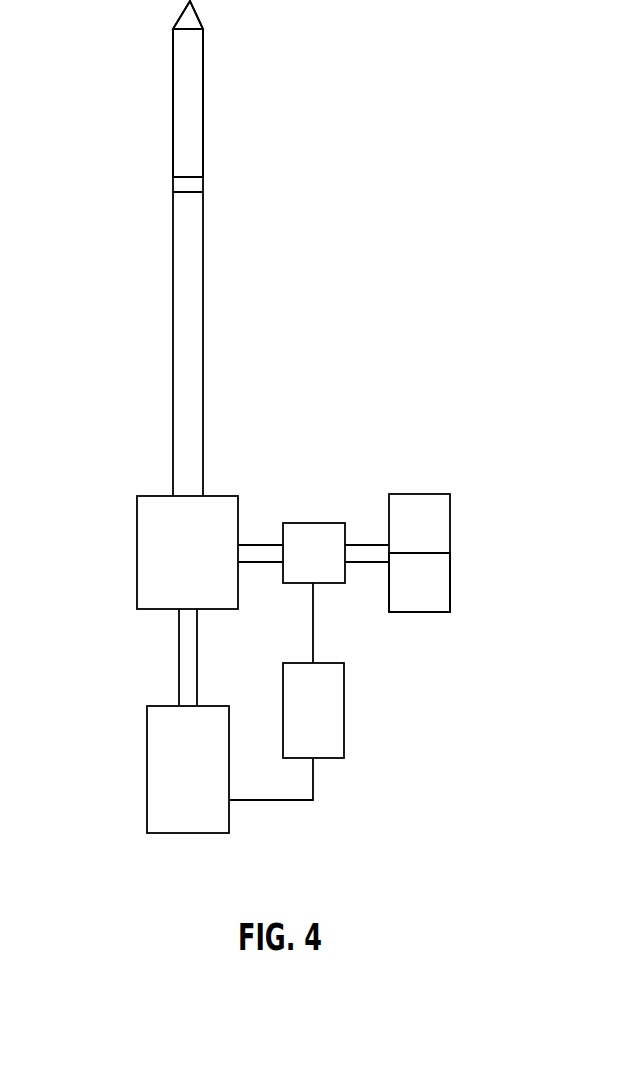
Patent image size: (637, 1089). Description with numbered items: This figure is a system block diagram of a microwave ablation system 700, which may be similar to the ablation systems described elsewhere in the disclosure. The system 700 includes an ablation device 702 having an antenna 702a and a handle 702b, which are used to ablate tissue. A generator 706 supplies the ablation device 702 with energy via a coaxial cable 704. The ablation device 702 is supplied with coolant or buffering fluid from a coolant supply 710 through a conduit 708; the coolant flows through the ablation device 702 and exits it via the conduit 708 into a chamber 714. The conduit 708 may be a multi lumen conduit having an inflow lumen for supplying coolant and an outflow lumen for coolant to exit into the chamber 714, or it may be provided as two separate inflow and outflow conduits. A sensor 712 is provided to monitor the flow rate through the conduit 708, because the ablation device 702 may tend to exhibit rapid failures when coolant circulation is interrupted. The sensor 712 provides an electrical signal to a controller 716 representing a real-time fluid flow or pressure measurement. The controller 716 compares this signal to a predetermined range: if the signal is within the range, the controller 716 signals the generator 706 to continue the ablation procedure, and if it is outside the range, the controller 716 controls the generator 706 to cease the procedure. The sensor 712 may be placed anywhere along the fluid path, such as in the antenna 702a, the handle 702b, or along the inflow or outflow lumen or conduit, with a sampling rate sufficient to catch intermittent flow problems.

The microwave ablation system 700 is at (418, 203).
The ablation device 702 is at (112, 310).
The antenna 702a is at (173, 113).
The handle 702b is at (137, 553).
The coaxial cable 704 is at (179, 657).
The generator 706 is at (147, 770).
The conduit 708 is at (370, 563).
The coolant supply 710 is at (420, 494).
The sensor 712 is at (314, 523).
The chamber 714 is at (420, 612).
The controller 716 is at (344, 713).